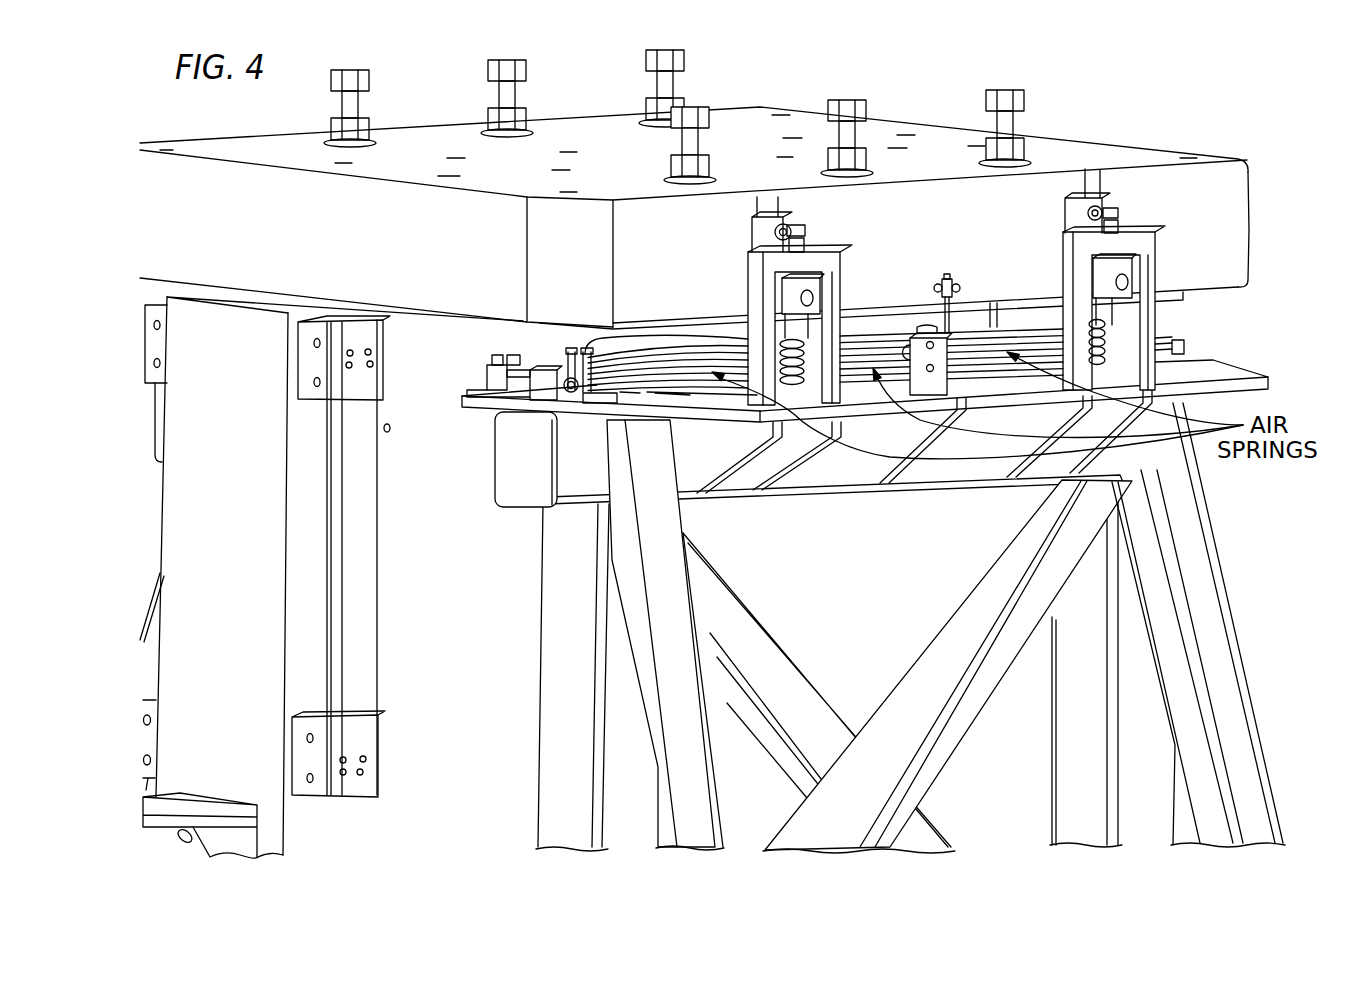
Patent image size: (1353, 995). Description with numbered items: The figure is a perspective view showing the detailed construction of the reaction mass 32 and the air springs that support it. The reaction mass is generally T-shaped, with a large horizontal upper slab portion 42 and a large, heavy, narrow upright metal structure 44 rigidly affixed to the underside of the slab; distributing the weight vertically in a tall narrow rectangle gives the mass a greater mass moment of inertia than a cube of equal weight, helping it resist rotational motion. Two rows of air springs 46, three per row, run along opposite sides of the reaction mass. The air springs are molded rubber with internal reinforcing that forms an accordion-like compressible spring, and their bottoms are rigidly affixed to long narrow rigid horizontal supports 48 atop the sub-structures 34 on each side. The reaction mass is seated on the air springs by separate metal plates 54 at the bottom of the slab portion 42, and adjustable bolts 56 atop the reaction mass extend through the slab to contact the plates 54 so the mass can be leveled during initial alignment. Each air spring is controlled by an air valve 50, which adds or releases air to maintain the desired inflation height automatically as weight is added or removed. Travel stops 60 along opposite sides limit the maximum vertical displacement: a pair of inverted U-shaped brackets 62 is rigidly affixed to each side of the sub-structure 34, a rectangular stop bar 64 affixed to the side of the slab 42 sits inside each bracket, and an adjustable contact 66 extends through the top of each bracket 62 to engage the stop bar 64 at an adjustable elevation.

The reaction mass 32 is at (760, 97).
The sub-structure 34 is at (1207, 617).
The upper slab portion 42 is at (1207, 237).
The upright metal structure 44 is at (235, 357).
The air springs 46 is at (640, 368).
The horizontal supports 48 is at (1227, 377).
The air valve 50 is at (933, 387).
The metal plates 54 is at (853, 323).
The adjustable bolts 56 is at (510, 92).
The travel stops 60 is at (1157, 207).
The inverted U-shaped brackets 62 is at (1107, 308).
The stop bar 64 is at (707, 390).
The adjustable contact 66 is at (1160, 178).